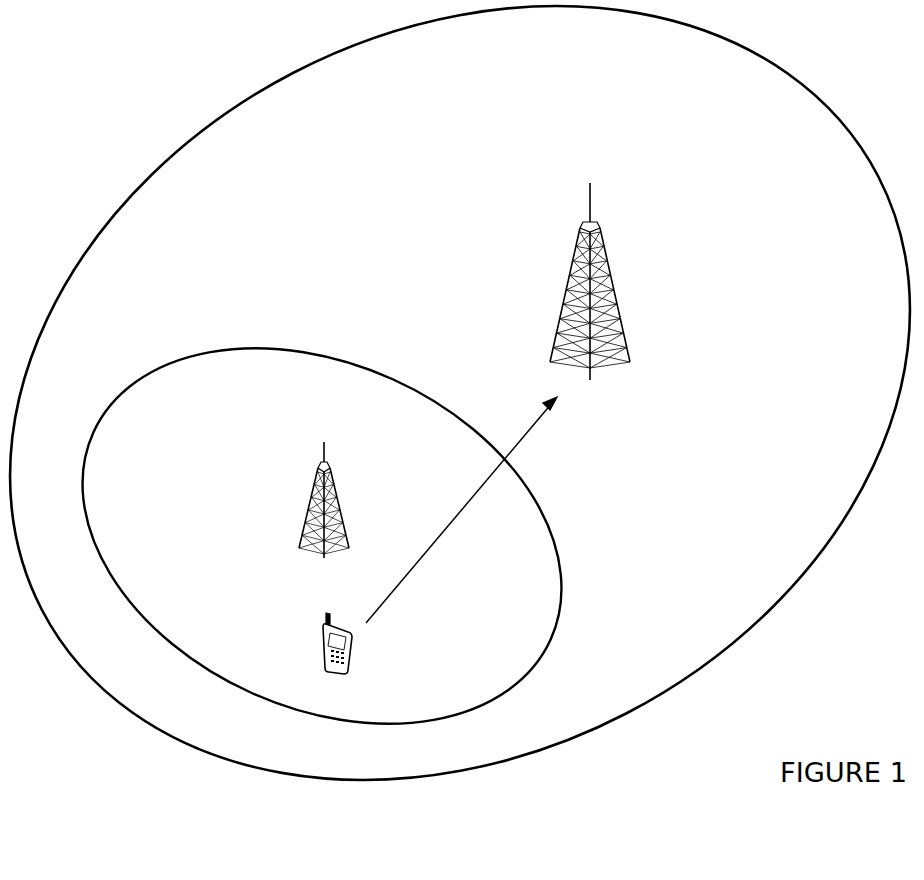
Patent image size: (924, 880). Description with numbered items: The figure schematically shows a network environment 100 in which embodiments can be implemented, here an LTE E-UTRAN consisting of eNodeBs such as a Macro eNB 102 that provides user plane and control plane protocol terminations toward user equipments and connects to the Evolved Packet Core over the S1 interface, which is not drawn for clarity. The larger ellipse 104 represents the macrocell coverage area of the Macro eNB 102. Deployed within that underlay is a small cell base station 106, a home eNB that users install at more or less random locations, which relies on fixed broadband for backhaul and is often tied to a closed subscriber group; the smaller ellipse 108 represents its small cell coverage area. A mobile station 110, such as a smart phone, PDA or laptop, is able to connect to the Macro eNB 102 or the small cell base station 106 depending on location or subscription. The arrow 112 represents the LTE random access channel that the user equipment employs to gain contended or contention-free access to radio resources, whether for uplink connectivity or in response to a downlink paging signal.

The network environment 100 is at (125, 108).
The Macro eNB 102 is at (612, 278).
The larger ellipse 104 is at (842, 119).
The small cell base station 106 is at (300, 497).
The smaller ellipse 108 is at (278, 346).
The mobile station 110 is at (322, 659).
The arrow 112 is at (465, 500).